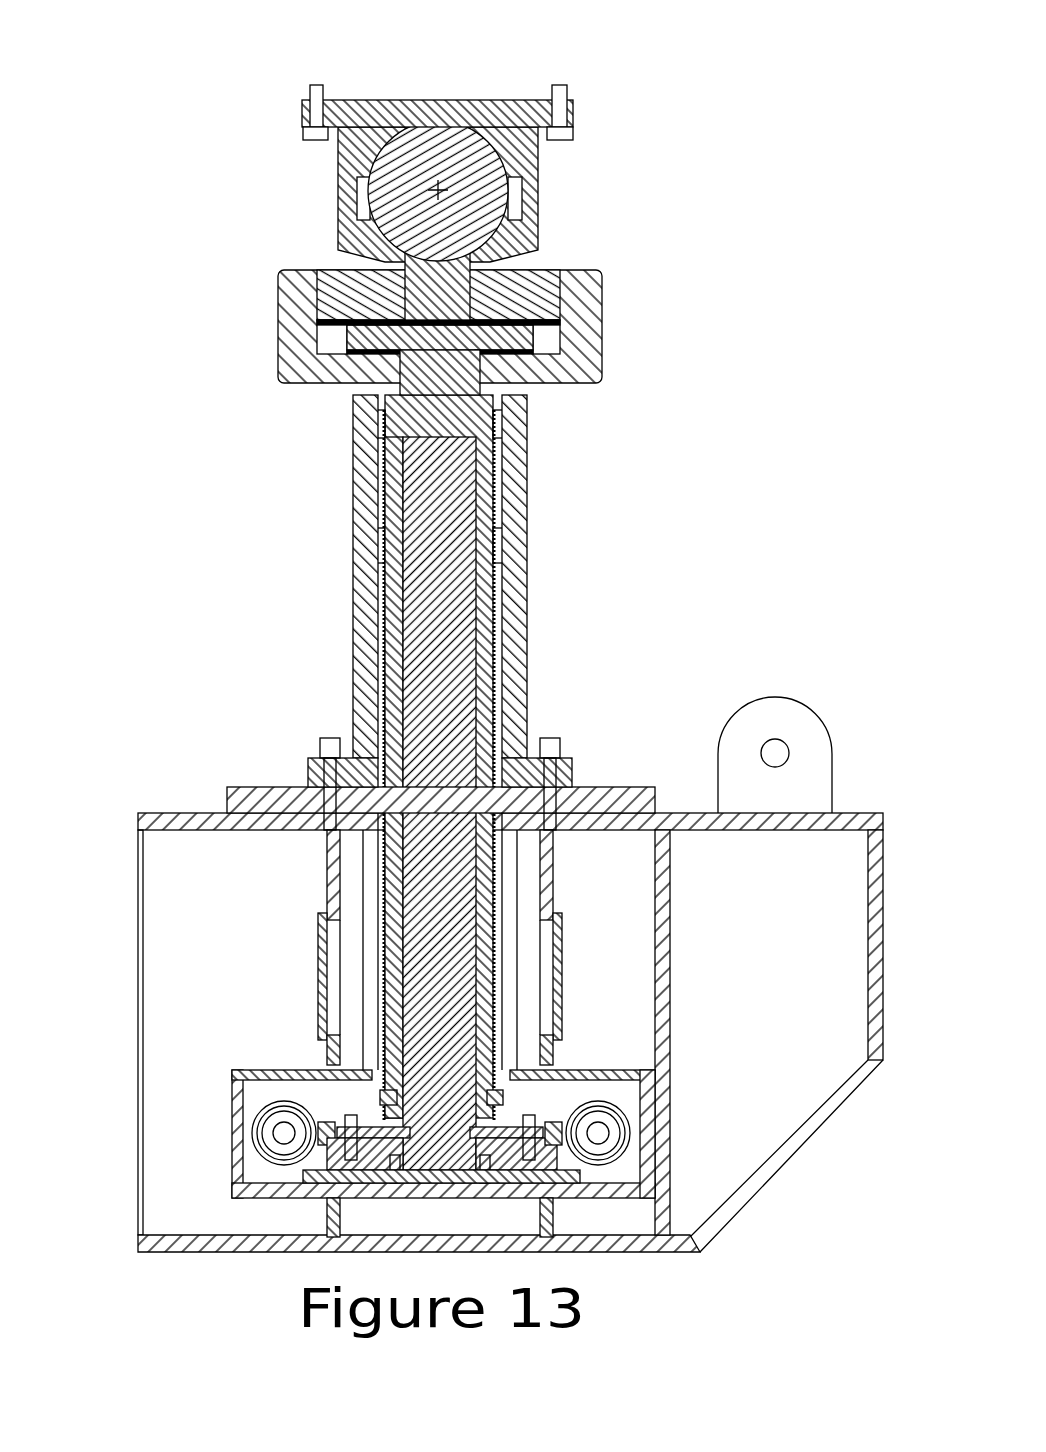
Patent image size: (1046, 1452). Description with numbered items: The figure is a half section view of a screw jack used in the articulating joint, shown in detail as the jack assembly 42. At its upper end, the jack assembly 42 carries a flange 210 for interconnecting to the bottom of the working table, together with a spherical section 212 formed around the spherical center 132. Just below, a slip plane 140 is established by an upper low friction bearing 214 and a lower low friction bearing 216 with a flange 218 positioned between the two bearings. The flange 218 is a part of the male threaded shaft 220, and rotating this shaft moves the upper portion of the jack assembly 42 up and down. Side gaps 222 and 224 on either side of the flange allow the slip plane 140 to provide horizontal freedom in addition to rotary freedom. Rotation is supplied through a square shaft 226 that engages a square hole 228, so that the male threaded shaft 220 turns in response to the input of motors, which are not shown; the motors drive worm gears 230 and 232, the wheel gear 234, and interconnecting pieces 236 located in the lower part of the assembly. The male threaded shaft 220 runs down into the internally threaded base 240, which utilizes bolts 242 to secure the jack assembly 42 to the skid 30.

The skid 30 is at (845, 813).
The jack assembly 42 is at (227, 167).
The spherical center 132 is at (440, 190).
The slip plane 140 is at (590, 322).
The flange 210 is at (572, 100).
The spherical section 212 is at (463, 100).
The upper low friction bearing 214 is at (562, 313).
The lower low friction bearing 216 is at (523, 352).
The flange 218 is at (523, 338).
The male threaded shaft 220 is at (492, 468).
The side gap 222 is at (328, 345).
The side gap 224 is at (385, 370).
The square shaft 226 is at (455, 612).
The square hole 228 is at (418, 670).
The worm gear 230 is at (253, 1130).
The worm gear 232 is at (600, 1133).
The wheel gear 234 is at (552, 1127).
The interconnecting pieces 236 is at (557, 1188).
The internally threaded base 240 is at (520, 543).
The bolts 242 is at (563, 743).